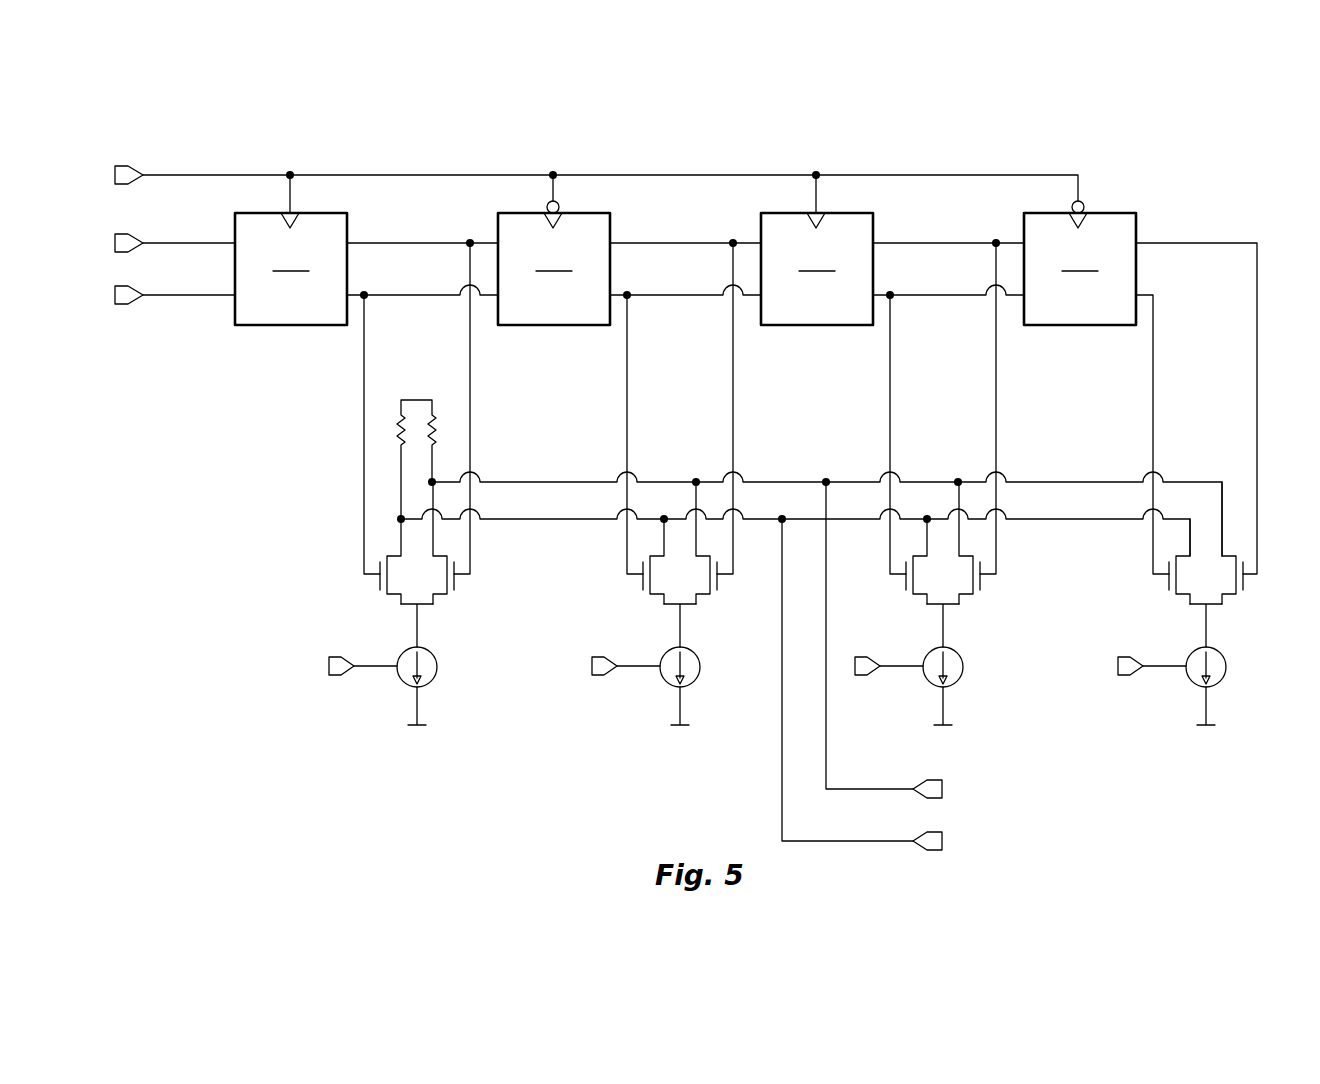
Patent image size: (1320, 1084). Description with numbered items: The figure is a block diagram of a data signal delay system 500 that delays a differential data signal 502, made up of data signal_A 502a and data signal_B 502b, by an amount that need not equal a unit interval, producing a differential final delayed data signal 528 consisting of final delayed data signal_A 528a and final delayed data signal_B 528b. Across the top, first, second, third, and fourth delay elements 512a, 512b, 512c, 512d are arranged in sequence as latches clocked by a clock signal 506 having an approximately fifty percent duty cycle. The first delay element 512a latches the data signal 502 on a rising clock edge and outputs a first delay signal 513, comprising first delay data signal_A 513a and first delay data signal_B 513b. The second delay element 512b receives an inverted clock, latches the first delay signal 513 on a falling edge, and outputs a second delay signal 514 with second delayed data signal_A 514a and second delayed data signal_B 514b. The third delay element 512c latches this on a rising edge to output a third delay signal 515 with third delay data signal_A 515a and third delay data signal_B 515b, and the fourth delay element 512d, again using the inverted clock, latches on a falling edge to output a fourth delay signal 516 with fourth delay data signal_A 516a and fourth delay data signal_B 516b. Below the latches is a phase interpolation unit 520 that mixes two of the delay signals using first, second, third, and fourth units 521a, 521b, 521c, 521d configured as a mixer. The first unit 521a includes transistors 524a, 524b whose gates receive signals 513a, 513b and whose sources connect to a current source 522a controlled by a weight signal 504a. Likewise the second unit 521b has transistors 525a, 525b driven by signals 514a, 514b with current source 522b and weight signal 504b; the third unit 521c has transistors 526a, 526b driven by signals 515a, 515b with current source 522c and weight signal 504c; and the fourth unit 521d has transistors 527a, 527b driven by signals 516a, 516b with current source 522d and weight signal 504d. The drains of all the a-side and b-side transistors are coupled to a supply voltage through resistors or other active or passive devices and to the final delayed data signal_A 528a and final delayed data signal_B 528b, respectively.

The data signal delay system 500 is at (1210, 164).
The differential data signal 502 is at (158, 263).
The data signal_A 502a is at (161, 243).
The data signal_B 502b is at (161, 295).
The weight signal 504a is at (396, 660).
The weight signal 504b is at (659, 660).
The weight signal 504c is at (922, 660).
The weight signal 504d is at (1185, 660).
The clock signal 506 is at (161, 175).
The first delay element 512a is at (291, 269).
The second delay element 512b is at (554, 269).
The third delay element 512c is at (817, 269).
The fourth delay element 512d is at (1080, 269).
The first delay signal 513 is at (435, 378).
The first delay data signal_A 513a is at (380, 243).
The first delay data signal_B 513b is at (380, 295).
The second delay signal 514 is at (698, 378).
The second delayed data signal_A 514a is at (643, 243).
The second delayed data signal_B 514b is at (643, 295).
The third delay signal 515 is at (960, 378).
The third delay data signal_A 515a is at (906, 243).
The third delay data signal_B 515b is at (906, 295).
The fourth delay signal 516 is at (1212, 378).
The fourth delay data signal_A 516a is at (1147, 243).
The fourth delay data signal_B 516b is at (1147, 295).
The phase interpolation unit 520 is at (258, 522).
The first unit 521a is at (390, 564).
The second unit 521b is at (653, 564).
The third unit 521c is at (975, 564).
The fourth unit 521d is at (1172, 564).
The current source 522a is at (438, 655).
The current source 522b is at (701, 655).
The current source 522c is at (964, 655).
The current source 522d is at (1227, 655).
The transistor 524a is at (443, 598).
The transistor 524b is at (390, 598).
The transistor 525a is at (706, 598).
The transistor 525b is at (653, 598).
The transistor 526a is at (969, 598).
The transistor 526b is at (916, 598).
The transistor 527a is at (1232, 598).
The transistor 527b is at (1179, 598).
The differential final delayed data signal 528 is at (906, 666).
The final delayed data signal_A 528a is at (861, 789).
The final delayed data signal_B 528b is at (861, 841).